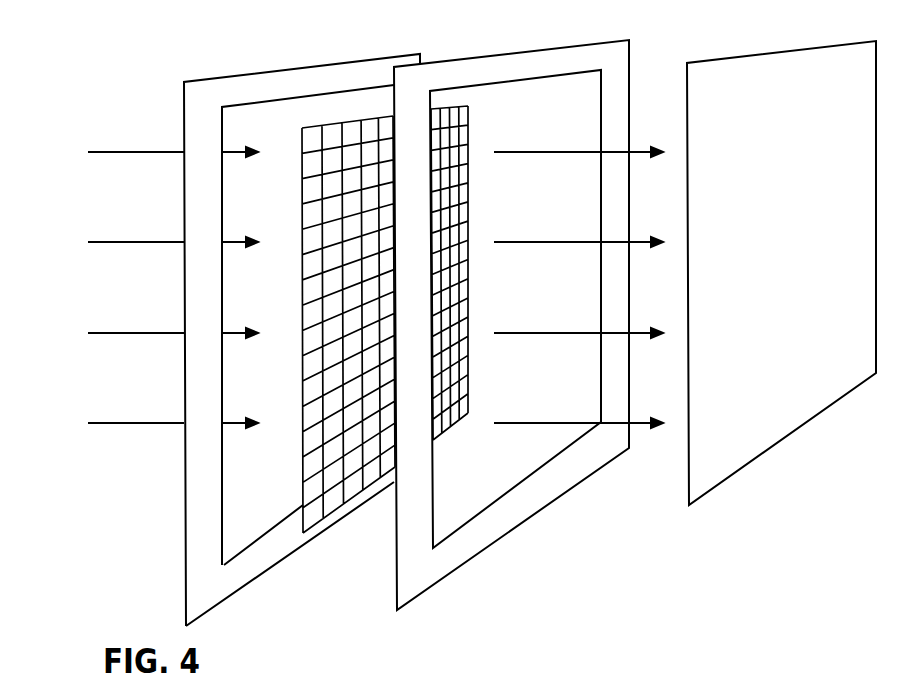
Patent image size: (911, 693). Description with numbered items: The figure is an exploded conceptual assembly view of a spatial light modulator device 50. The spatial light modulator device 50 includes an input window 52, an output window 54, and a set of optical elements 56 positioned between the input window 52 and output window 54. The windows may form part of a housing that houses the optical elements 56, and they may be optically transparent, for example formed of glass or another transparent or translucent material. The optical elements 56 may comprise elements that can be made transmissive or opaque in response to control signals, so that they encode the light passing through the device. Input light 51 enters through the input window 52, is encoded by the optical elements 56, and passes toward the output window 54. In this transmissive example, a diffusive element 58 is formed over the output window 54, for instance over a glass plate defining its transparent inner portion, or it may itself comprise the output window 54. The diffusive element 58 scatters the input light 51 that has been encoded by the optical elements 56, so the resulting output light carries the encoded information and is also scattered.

The spatial light modulator device 50 is at (192, 44).
The input light 51 is at (120, 350).
The input window 52 is at (215, 595).
The output window 54 is at (418, 578).
The optical elements 56 is at (323, 497).
The diffusive element 58 is at (712, 468).